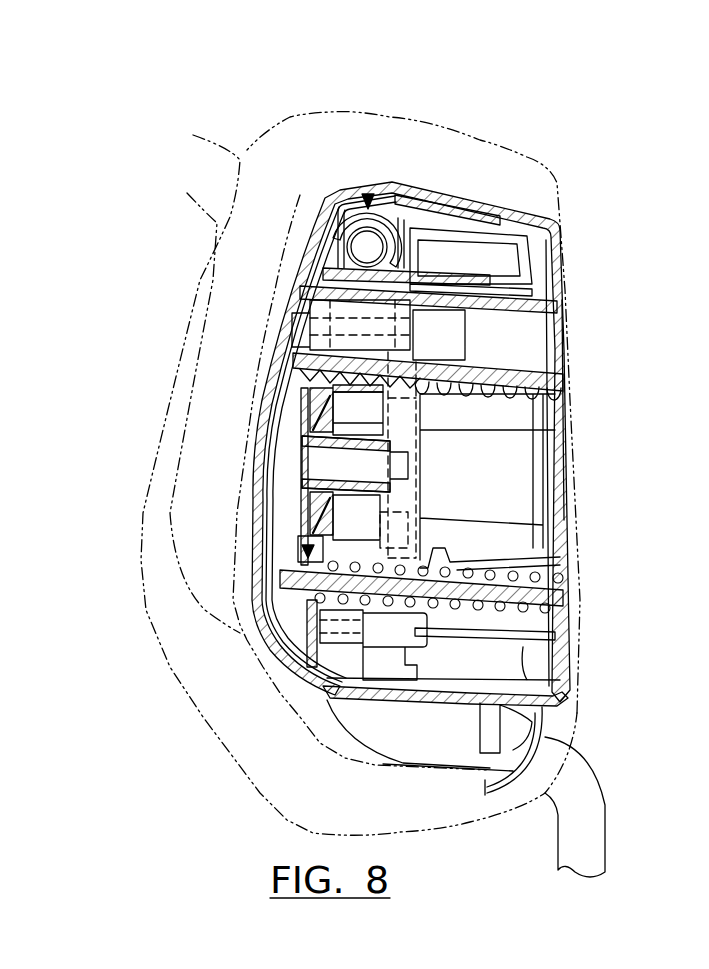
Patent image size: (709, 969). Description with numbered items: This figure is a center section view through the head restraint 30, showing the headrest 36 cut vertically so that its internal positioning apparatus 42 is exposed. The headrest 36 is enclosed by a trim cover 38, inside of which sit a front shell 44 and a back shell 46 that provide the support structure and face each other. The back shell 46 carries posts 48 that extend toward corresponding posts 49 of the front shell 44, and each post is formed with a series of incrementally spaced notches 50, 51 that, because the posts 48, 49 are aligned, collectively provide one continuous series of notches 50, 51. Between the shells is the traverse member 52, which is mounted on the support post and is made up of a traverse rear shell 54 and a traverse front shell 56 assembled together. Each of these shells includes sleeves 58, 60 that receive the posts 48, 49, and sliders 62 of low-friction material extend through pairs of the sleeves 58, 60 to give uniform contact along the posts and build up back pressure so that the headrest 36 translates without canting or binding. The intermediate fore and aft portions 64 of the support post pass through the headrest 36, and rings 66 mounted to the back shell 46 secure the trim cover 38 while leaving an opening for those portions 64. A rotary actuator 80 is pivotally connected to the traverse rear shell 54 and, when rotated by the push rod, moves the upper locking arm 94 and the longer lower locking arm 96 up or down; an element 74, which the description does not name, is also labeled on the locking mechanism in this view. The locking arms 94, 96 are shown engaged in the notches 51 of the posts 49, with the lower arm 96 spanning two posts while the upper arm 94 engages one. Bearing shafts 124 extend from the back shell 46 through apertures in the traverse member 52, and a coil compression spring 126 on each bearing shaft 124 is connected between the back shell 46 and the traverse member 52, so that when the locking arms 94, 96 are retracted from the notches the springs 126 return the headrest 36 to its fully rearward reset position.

The vehicle seat assembly 30 is at (247, 110).
The headrest 36 is at (197, 139).
The trim cover 38 is at (330, 464).
The positioning apparatus 42 is at (492, 118).
The front shell 44 is at (262, 458).
The back shell 46 is at (562, 253).
The posts 48 is at (445, 376).
The posts 49 is at (455, 358).
The notches 50 is at (445, 392).
The notches 51 is at (330, 338).
The traverse member 52 is at (368, 196).
The traverse rear shell 54 is at (400, 265).
The traverse front shell 56 is at (350, 247).
The sleeves 58 is at (337, 283).
The sleeves 60 is at (405, 263).
The sliders 62 is at (330, 290).
The intermediate fore and aft portions 64 is at (443, 753).
The rings 66 is at (545, 740).
The pin 74 is at (288, 406).
The rotary actuator 80 is at (410, 452).
The upper locking arm 94 is at (320, 385).
The lower locking arm 96 is at (318, 537).
The bearing shafts 124 is at (520, 582).
The coil compression spring 126 is at (480, 607).